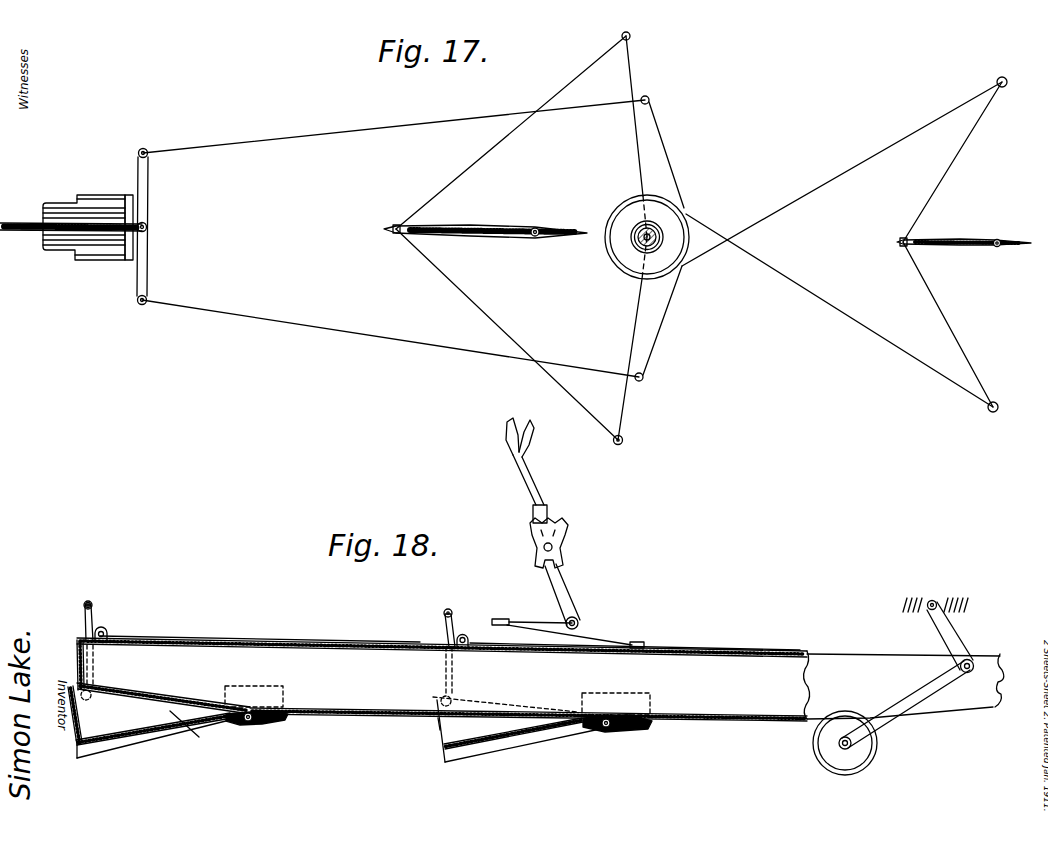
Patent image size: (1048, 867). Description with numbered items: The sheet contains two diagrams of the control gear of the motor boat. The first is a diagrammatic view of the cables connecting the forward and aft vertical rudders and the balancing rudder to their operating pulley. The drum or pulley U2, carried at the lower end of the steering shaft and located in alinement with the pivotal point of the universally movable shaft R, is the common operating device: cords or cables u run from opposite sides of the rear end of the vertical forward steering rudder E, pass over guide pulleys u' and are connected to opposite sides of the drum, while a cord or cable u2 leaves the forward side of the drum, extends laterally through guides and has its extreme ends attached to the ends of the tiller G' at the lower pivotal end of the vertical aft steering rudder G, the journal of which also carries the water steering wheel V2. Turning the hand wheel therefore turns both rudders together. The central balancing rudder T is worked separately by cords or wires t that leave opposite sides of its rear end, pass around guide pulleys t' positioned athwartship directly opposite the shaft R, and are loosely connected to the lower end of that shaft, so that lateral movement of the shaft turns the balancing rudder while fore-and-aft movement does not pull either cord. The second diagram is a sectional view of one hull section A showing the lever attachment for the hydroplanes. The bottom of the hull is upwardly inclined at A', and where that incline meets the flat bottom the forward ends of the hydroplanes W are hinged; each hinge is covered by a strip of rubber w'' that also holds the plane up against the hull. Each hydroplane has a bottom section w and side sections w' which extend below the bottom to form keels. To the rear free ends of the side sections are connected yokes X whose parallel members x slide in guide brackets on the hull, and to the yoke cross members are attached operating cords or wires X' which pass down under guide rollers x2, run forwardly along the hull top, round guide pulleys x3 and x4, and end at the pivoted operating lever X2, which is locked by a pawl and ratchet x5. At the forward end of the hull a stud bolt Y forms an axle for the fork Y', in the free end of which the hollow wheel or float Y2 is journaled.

In FIG. 17, the vertical aft steering rudder G is at (73, 243).
In FIG. 17, the tiller G' is at (161, 227).
In FIG. 17, the water steering wheel V2 is at (60, 206).
In FIG. 17, the cord or cable u2 is at (242, 144).
In FIG. 17, the drum or pulley U2 is at (668, 222).
In FIG. 17, the shaft R is at (636, 245).
In FIG. 17, the guide pulleys t' is at (640, 233).
In FIG. 17, the cords or wires t is at (525, 243).
In FIG. 17, the balancing rudder T is at (478, 226).
In FIG. 17, the vertical forward steering rudder E is at (958, 238).
In FIG. 17, the guide pulleys u' is at (955, 244).
In FIG. 17, the cords or cables u is at (842, 244).
In FIG. 18, the hull section A is at (540, 672).
In FIG. 18, the upwardly inclined bottom A' is at (163, 686).
In FIG. 18, the hydroplanes W is at (325, 724).
In FIG. 18, the bottom sections w is at (338, 745).
In FIG. 18, the side sections w' is at (305, 729).
In FIG. 18, the strip of rubber w'' is at (450, 732).
In FIG. 18, the yokes X is at (249, 653).
In FIG. 18, the parallel members x is at (91, 605).
In FIG. 18, the guide rollers x2 is at (108, 630).
In FIG. 18, the operating cords or wires X' is at (450, 643).
In FIG. 18, the guide pulley x4 is at (506, 619).
In FIG. 18, the guide pulley x3 is at (642, 642).
In FIG. 18, the operating lever X2 is at (578, 592).
In FIG. 18, the pawl and ratchet x5 is at (565, 519).
In FIG. 18, the stud bolt Y is at (941, 651).
In FIG. 18, the fork Y' is at (906, 704).
In FIG. 18, the hollow wheel or float Y2 is at (858, 757).